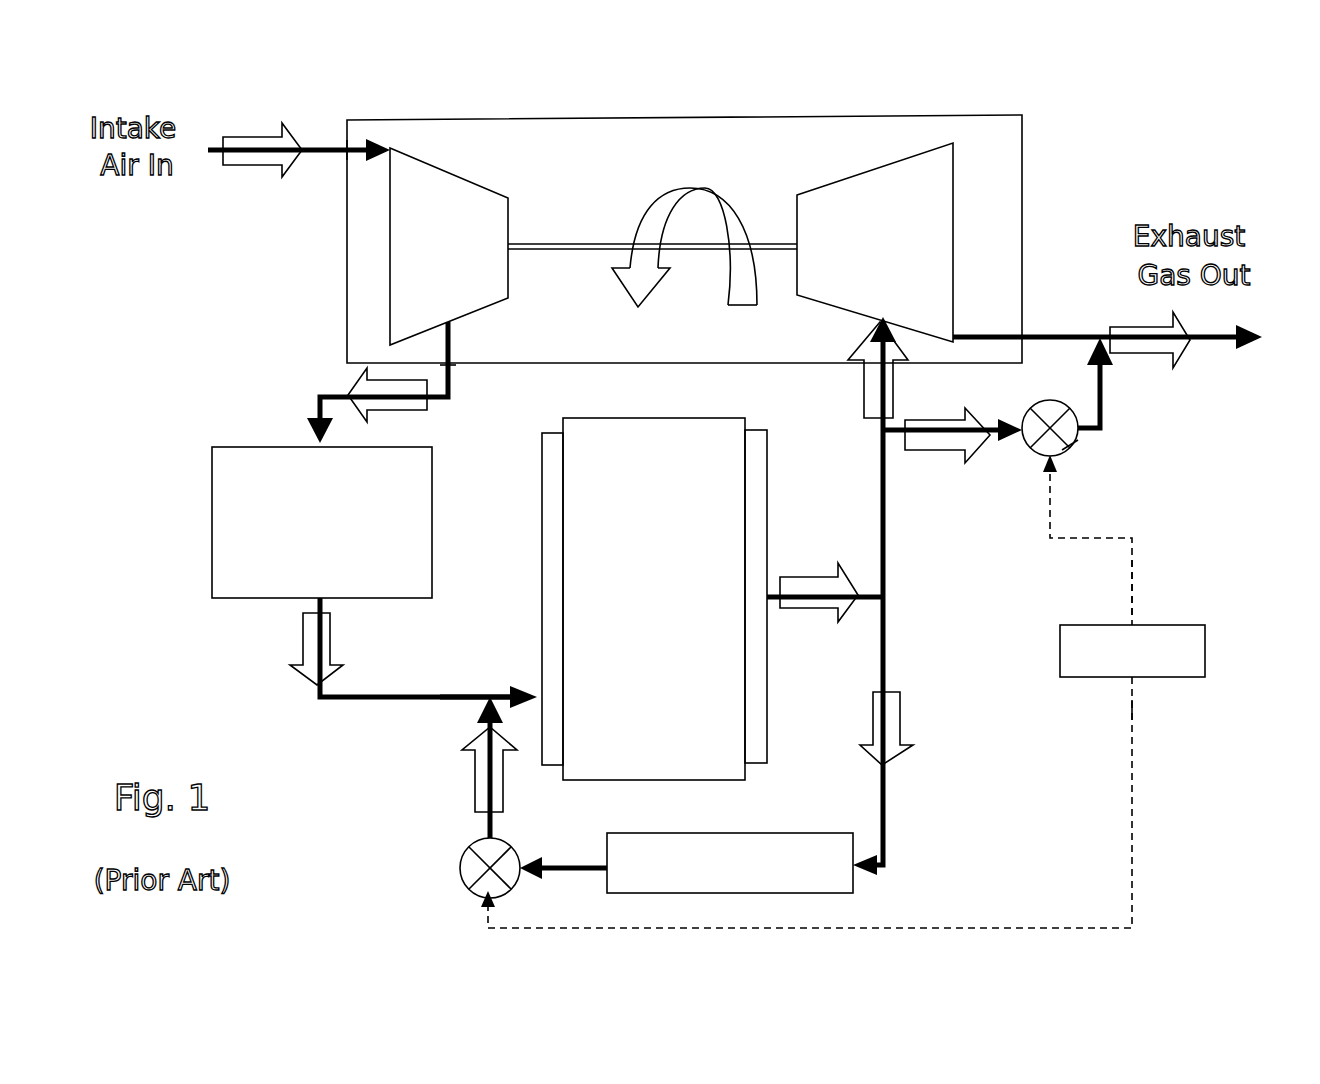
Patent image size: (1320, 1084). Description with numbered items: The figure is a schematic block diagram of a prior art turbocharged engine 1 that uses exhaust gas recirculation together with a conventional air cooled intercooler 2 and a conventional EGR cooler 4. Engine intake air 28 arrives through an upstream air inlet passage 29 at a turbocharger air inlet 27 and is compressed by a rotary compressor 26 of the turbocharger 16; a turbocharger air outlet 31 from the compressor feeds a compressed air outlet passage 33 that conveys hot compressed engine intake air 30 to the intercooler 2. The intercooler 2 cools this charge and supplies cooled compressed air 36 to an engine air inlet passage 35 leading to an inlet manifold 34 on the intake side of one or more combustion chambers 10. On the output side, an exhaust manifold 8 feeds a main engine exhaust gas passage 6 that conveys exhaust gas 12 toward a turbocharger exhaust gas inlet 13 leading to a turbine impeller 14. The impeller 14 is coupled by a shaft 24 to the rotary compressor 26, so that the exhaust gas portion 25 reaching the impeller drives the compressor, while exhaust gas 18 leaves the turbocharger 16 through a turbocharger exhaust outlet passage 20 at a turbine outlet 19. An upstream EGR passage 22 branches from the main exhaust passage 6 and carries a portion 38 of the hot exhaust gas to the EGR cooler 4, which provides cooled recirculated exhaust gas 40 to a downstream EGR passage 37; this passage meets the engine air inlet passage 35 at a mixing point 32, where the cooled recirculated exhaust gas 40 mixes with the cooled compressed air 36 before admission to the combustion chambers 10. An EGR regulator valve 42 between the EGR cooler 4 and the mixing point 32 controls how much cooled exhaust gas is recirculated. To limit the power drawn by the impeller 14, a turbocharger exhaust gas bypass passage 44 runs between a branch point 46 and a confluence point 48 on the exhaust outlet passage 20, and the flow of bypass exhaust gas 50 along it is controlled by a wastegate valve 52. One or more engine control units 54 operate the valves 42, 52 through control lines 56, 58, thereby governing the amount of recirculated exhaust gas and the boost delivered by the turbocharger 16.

The turbocharged engine 1 is at (1170, 772).
The intercooler 2 is at (322, 522).
The EGR cooler 4 is at (730, 863).
The main engine exhaust gas passage 6 is at (885, 557).
The exhaust manifold 8 is at (758, 705).
The combustion chambers 10 is at (654, 599).
The exhaust gas 12 is at (812, 570).
The turbocharger exhaust gas inlet 13 is at (892, 370).
The turbine impeller 14 is at (875, 242).
The turbocharger 16 is at (1030, 197).
The exhaust gas 18 is at (1167, 358).
The turbine outlet 19 is at (1022, 335).
The turbocharger exhaust outlet passage 20 is at (1208, 345).
The upstream EGR passage 22 is at (885, 645).
The shaft 24 is at (572, 258).
The exhaust gas portion 25 is at (860, 385).
The rotary compressor 26 is at (449, 246).
The turbocharger air inlet 27 is at (347, 152).
The engine intake air 28 is at (268, 170).
The upstream air inlet passage 29 is at (210, 148).
The hot compressed engine intake air 30 is at (367, 369).
The turbocharger air outlet 31 is at (450, 367).
The mixing point 32 is at (492, 698).
The compressed air outlet passage 33 is at (438, 397).
The inlet manifold 34 is at (548, 575).
The engine air inlet passage 35 is at (353, 697).
The cooled compressed air 36 is at (302, 638).
The downstream EGR passage 37 is at (503, 730).
The portion of hot exhaust gas 38 is at (893, 727).
The cooled recirculated exhaust gas 40 is at (473, 775).
The EGR regulator valve 42 is at (460, 883).
The turbocharger exhaust gas bypass passage 44 is at (1105, 383).
The branch point 46 is at (888, 438).
The confluence point 48 is at (1097, 340).
The bypass exhaust gas 50 is at (928, 452).
The wastegate valve 52 is at (1077, 443).
The engine control unit 54 is at (1132, 651).
The control line 56 is at (1128, 857).
The control line 58 is at (1137, 597).